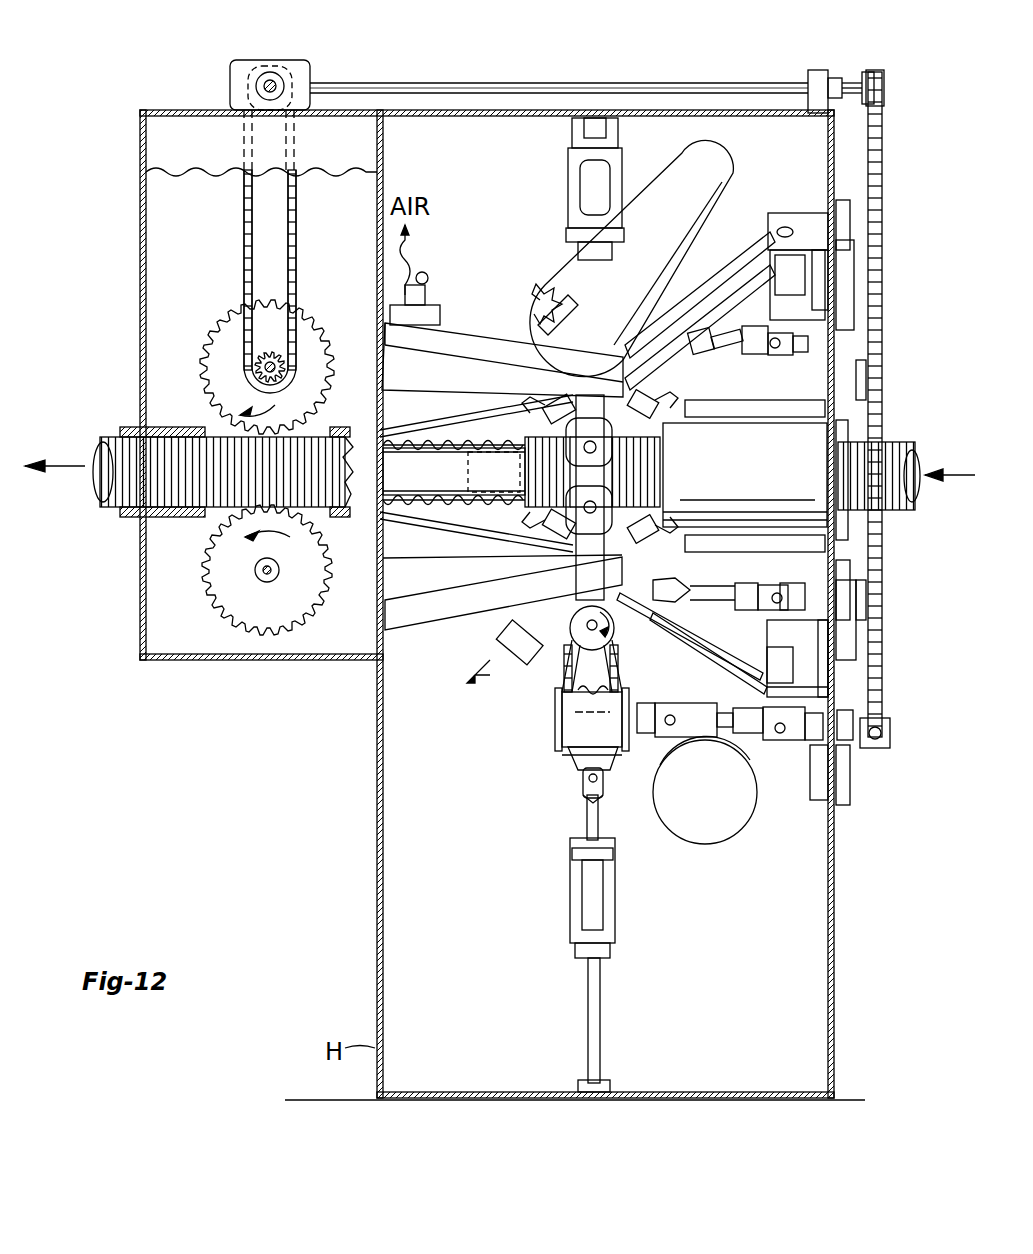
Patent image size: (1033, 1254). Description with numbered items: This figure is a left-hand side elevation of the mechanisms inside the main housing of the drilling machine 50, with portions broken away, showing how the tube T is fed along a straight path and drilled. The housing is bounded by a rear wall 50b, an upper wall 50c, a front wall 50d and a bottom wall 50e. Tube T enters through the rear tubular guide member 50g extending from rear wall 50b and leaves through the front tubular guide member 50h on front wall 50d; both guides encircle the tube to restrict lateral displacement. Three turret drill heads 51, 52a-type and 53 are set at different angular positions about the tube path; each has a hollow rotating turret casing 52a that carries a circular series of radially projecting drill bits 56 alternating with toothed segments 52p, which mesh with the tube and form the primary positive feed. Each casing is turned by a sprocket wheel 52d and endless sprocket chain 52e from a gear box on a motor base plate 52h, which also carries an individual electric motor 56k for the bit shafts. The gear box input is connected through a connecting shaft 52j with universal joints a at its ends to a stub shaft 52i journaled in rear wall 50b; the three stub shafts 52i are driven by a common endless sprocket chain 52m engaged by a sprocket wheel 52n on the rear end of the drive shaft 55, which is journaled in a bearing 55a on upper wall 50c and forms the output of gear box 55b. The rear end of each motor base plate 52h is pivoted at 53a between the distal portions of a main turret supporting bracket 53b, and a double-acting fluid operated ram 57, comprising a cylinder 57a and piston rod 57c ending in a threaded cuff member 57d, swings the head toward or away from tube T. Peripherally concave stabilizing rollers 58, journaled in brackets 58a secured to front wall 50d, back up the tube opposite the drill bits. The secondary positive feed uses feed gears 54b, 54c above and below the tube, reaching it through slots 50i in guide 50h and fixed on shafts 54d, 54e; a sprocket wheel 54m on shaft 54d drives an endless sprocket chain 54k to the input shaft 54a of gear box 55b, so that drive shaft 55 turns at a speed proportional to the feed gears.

The drilling machine 50 is at (487, 579).
The rear wall 50b is at (827, 940).
The upper wall 50c is at (545, 108).
The front wall 50d is at (376, 795).
The bottom wall 50e is at (508, 1090).
The rear tubular guide member 50g is at (800, 468).
The front tubular guide member 50h is at (130, 425).
The slots 50i is at (200, 560).
The turret drill head 51 is at (510, 290).
The turret drill casing 52a is at (675, 367).
The sprocket wheel 52d is at (612, 632).
The endless sprocket chain 52e is at (625, 667).
The motor base plate 52h is at (720, 213).
The stub shaft 52i is at (861, 622).
The connecting shaft 52j is at (727, 355).
The common endless sprocket chain 52m is at (935, 190).
The sprocket wheel 52n is at (890, 70).
The toothed segments 52p is at (515, 270).
The turret drill head 53 is at (480, 677).
The pivot 53a is at (790, 222).
The main turret supporting bracket 53b is at (845, 270).
The input shaft 54a is at (273, 72).
The feed gear 54b is at (215, 327).
The feed gear 54c is at (292, 617).
The shaft 54d is at (230, 320).
The shaft 54e is at (215, 580).
The endless sprocket chain 54k is at (240, 214).
The sprocket wheel 54m is at (285, 345).
The drive shaft 55 is at (480, 80).
The bearing 55a is at (810, 72).
The gear box 55b is at (235, 60).
The drill bits 56 is at (548, 305).
The electric motor 56k is at (723, 840).
The double-acting fluid operated ram 57 is at (568, 176).
The cylinder 57a is at (613, 898).
The piston rod 57c is at (585, 828).
The cuff member 57d is at (583, 790).
The stabilizing roller 58 is at (468, 467).
The bracket 58a is at (485, 330).
The tube T is at (110, 505).
The universal joints a is at (775, 360).